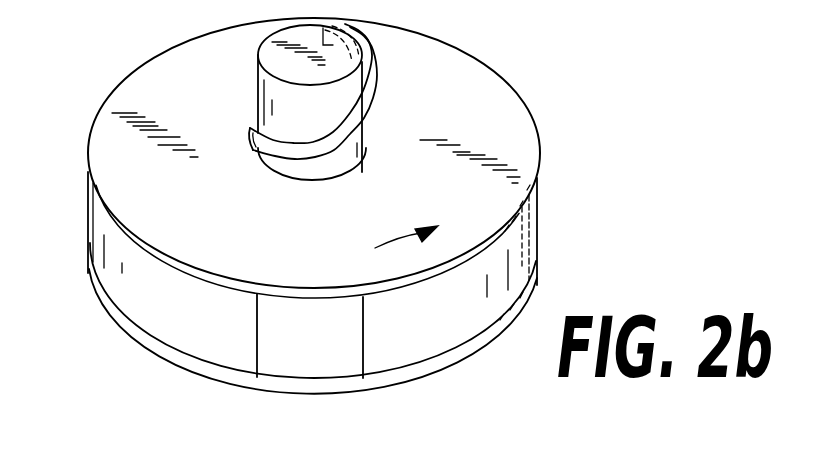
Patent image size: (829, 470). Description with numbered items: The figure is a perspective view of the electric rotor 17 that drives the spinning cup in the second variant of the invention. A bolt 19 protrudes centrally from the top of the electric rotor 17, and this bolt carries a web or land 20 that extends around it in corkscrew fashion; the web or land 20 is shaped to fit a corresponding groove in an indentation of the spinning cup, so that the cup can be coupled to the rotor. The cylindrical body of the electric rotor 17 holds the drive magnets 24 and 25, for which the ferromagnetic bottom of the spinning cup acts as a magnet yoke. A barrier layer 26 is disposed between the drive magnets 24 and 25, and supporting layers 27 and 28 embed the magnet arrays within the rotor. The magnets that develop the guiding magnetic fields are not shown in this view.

The electric rotor 17 is at (562, 181).
The bolt 19 is at (258, 72).
The web or land 20 is at (378, 100).
The drive magnet 24 is at (440, 338).
The drive magnet 25 is at (213, 348).
The barrier layer 26 is at (277, 365).
The supporting layer 27 is at (343, 385).
The supporting layer 28 is at (303, 291).